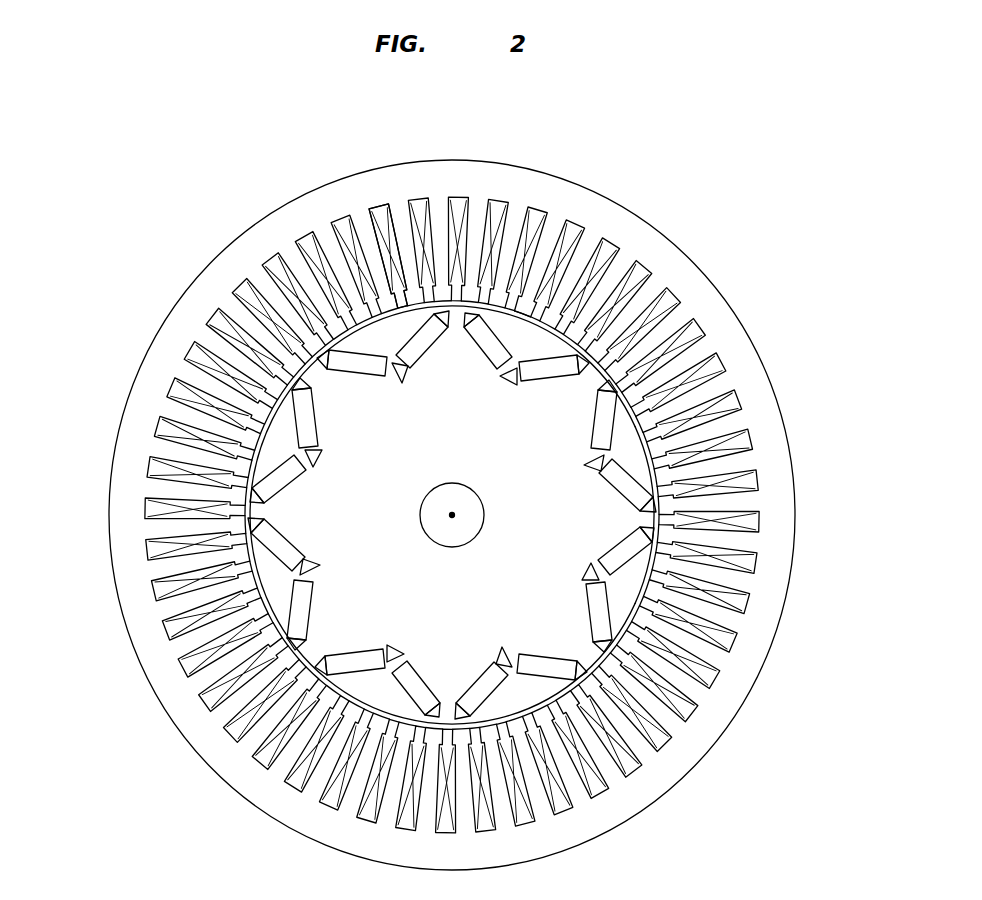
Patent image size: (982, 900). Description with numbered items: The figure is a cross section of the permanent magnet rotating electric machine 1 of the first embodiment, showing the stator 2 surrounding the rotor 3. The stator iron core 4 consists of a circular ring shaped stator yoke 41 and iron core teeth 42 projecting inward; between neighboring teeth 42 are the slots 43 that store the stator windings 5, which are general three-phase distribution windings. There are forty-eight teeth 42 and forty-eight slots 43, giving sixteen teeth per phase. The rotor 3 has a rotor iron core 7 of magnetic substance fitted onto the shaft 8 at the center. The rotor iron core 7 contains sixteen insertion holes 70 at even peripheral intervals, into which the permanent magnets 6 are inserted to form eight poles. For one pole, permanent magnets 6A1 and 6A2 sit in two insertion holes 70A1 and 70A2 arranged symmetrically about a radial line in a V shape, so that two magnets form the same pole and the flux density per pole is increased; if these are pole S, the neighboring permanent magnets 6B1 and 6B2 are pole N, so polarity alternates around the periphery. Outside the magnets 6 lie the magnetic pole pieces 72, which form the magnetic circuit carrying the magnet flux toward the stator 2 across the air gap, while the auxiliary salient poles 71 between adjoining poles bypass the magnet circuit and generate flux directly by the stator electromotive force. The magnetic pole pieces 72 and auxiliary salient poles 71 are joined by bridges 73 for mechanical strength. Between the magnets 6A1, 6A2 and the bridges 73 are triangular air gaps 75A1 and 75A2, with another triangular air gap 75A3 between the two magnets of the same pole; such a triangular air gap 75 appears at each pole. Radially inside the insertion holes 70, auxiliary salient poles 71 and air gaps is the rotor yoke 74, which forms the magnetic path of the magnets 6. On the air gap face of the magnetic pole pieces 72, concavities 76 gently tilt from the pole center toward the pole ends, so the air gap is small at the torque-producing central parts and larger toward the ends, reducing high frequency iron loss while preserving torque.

The permanent magnet rotating electric machine 1 is at (855, 165).
The stator 2 is at (776, 378).
The rotor 3 is at (352, 515).
The stator iron core 4 is at (770, 548).
The stator windings 5 is at (737, 642).
The stator yoke 41 is at (712, 290).
The iron core teeth 42 is at (553, 218).
The slots 43 is at (384, 200).
The permanent magnets 6 is at (447, 515).
The permanent magnet 6A1 is at (268, 557).
The permanent magnet 6A2 is at (292, 627).
The permanent magnet 6B1 is at (322, 432).
The permanent magnet 6B2 is at (308, 470).
The rotor iron core 7 is at (351, 515).
The shaft 8 is at (470, 486).
The insertion holes 70 is at (319, 579).
The insertion hole 70A1 is at (312, 557).
The insertion hole 70A2 is at (322, 610).
The auxiliary salient poles 71 is at (650, 518).
The magnetic pole pieces 72 is at (541, 380).
The bridges 73 is at (352, 350).
The rotor yoke 74 is at (525, 633).
The triangular air gap 75 is at (403, 380).
The triangular air gap 75A1 is at (262, 520).
The triangular air gap 75A2 is at (305, 647).
The triangular air gap 75A3 is at (320, 567).
The concavities 76 is at (567, 346).